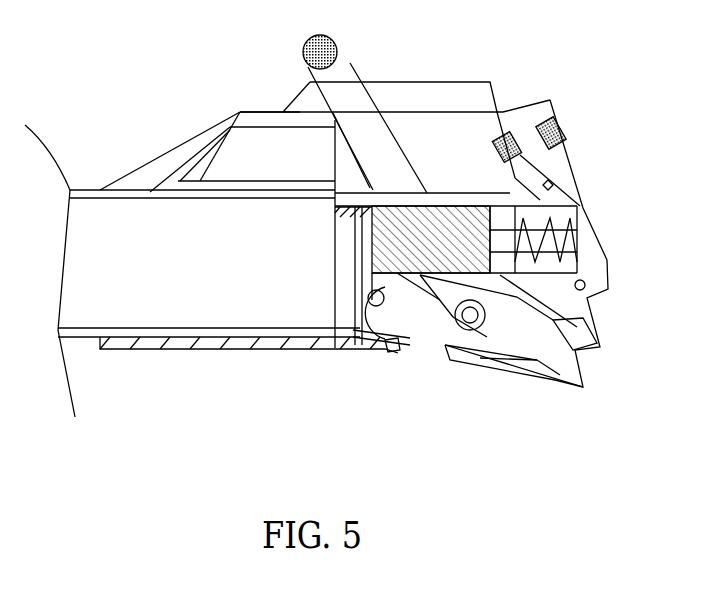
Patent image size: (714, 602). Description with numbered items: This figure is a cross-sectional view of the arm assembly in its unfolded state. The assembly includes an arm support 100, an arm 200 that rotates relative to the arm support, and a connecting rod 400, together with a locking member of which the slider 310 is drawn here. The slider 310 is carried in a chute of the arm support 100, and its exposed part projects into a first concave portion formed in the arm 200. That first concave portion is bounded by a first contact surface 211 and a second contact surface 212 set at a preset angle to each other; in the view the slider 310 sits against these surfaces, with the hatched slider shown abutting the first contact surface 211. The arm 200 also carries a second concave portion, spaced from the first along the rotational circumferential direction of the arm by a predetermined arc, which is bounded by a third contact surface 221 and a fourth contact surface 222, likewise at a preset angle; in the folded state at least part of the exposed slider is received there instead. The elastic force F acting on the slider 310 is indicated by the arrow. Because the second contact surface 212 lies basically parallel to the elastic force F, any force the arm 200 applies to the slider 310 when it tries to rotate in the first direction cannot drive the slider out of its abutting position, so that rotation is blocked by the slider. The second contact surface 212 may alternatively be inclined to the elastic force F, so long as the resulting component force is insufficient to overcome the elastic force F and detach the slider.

The arm support 100 is at (434, 92).
The arm 200 is at (264, 118).
The connecting rod 400 is at (344, 73).
The slider 310 is at (470, 228).
The first contact surface 211 is at (371, 237).
The second contact surface 212 is at (391, 275).
The third contact surface 221 is at (380, 338).
The fourth contact surface 222 is at (391, 344).
The elastic force F is at (508, 245).